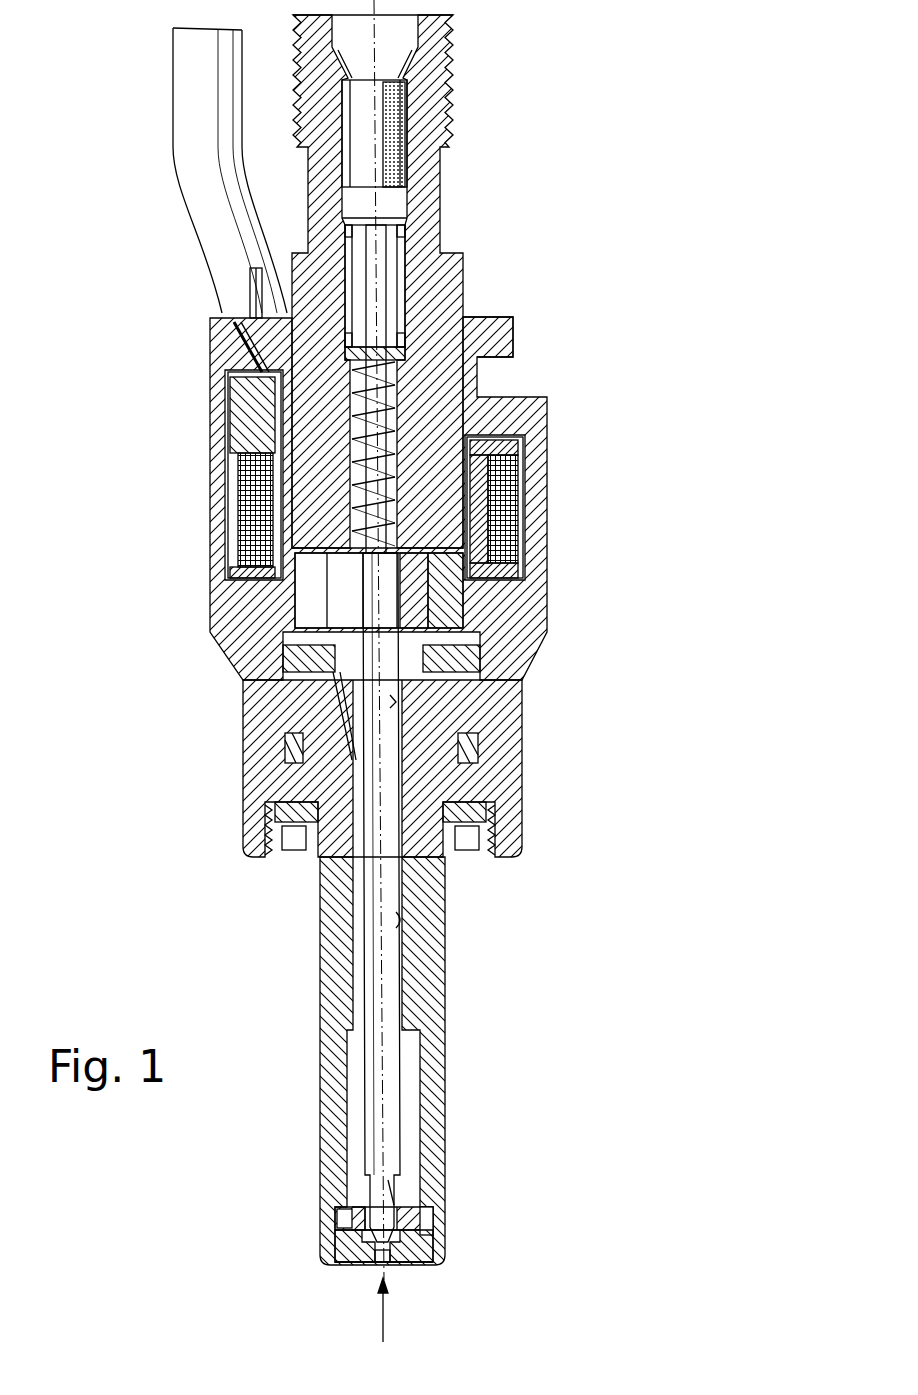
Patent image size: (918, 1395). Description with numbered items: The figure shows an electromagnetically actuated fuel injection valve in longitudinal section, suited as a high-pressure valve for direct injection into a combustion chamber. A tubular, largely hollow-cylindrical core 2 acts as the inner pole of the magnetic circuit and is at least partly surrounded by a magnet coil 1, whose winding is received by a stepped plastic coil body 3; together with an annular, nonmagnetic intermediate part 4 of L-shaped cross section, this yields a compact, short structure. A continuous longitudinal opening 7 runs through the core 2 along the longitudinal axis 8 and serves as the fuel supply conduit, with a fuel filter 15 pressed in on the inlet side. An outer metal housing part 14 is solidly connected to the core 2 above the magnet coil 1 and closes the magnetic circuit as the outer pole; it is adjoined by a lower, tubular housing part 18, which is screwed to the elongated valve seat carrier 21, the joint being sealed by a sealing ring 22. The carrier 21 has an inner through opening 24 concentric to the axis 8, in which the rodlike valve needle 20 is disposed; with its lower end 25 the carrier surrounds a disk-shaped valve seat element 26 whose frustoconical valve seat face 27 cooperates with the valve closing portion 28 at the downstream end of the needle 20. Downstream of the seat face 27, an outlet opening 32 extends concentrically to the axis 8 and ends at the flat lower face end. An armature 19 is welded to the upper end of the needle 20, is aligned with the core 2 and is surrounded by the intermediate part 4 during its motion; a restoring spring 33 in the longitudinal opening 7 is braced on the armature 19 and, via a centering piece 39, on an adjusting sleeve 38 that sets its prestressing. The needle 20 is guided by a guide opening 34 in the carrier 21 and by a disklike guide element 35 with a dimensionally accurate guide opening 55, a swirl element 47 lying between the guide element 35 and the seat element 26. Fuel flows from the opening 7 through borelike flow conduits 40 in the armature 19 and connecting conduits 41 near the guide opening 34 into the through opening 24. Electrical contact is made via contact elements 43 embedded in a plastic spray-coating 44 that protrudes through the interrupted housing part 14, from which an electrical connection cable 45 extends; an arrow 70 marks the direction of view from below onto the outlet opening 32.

The magnet coil 1 is at (292, 495).
The core 2 is at (443, 258).
The coil body 3 is at (500, 467).
The intermediate part 4 is at (510, 513).
The longitudinal opening 7 is at (400, 405).
The longitudinal axis 8 is at (385, 1074).
The upper housing part 14 is at (530, 415).
The fuel filter 15 is at (407, 113).
The lower housing part 18 is at (510, 688).
The armature 19 is at (307, 602).
The valve needle 20 is at (372, 968).
The valve seat carrier 21 is at (445, 955).
The sealing ring 22 is at (290, 748).
The through opening 24 is at (398, 922).
The lower end 25 is at (440, 1255).
The valve seat element 26 is at (345, 1248).
The valve seat face 27 is at (345, 1210).
The valve closing portion 28 is at (440, 1242).
The outlet opening 32 is at (340, 1222).
The restoring spring 33 is at (350, 400).
The guide opening 34 is at (396, 700).
The guide element 35 is at (420, 1210).
The adjusting sleeve 38 is at (405, 272).
The centering piece 39 is at (470, 352).
The flow conduit 40 is at (420, 598).
The connecting conduit 41 is at (347, 698).
The contact element 43 is at (255, 282).
The plastic spray-coating 44 is at (222, 345).
The electrical connection cable 45 is at (178, 77).
The swirl element 47 is at (440, 1216).
The guide opening 55 is at (395, 1182).
The arrow 70 is at (383, 1323).